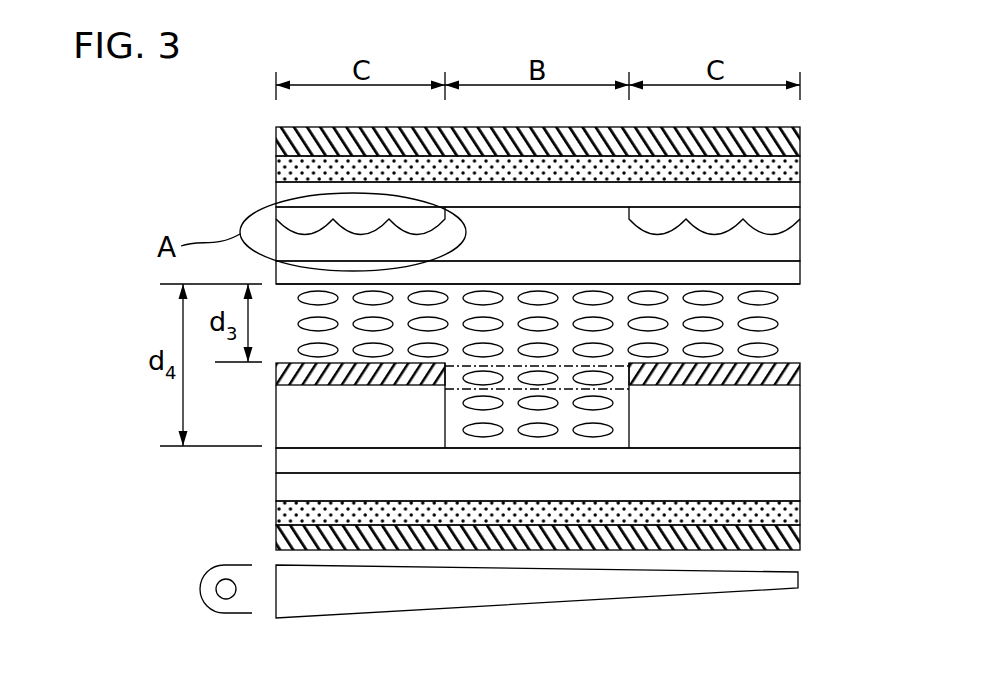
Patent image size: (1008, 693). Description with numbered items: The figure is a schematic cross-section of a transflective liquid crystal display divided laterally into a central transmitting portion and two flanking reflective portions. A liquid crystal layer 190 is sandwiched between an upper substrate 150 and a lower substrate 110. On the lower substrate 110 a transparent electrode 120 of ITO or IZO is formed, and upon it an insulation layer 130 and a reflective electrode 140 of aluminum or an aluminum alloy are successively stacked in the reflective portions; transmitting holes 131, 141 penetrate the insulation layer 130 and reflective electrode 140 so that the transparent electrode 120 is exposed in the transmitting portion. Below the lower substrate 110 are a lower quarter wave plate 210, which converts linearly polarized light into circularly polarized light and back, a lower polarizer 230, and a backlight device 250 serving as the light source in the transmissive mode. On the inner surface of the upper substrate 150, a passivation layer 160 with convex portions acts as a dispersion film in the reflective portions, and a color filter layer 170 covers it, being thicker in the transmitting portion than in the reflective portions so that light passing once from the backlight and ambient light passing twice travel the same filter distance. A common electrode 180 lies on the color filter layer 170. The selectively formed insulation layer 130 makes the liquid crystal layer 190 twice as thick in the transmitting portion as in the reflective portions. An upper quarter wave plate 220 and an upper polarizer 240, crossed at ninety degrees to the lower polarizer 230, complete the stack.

The lower substrate 110 is at (789, 495).
The transparent electrode 120 is at (789, 462).
The insulation layer 130 is at (789, 438).
The transmitting hole 131 is at (513, 415).
The reflective electrode 140 is at (795, 380).
The transmitting hole 141 is at (563, 377).
The upper substrate 150 is at (787, 201).
The passivation layer 160 is at (787, 233).
The color filter layer 170 is at (787, 262).
The common electrode 180 is at (795, 284).
The liquid crystal layer 190 is at (782, 338).
The lower quarter wave plate 210 is at (798, 514).
The upper quarter wave plate 220 is at (788, 176).
The lower polarizer 230 is at (798, 549).
The upper polarizer 240 is at (788, 142).
The backlight device 250 is at (798, 585).